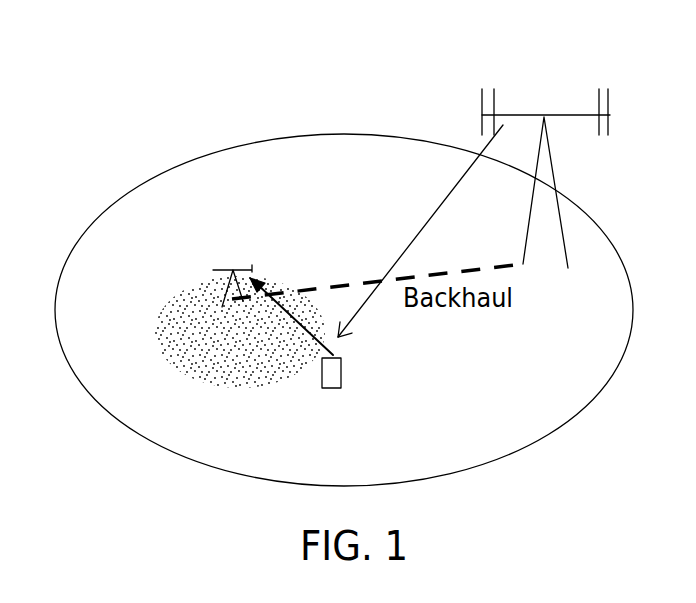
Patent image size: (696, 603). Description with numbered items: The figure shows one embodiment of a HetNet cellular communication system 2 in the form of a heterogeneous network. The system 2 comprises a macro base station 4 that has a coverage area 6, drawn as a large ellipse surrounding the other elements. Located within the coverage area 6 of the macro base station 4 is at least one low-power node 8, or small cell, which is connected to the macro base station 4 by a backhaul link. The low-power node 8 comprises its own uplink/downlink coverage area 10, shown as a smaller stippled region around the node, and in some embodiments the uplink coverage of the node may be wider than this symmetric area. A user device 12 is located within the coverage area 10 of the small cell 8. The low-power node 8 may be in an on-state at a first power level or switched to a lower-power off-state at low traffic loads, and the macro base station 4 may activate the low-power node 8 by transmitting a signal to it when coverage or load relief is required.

The HetNet cellular communication system 2 is at (546, 60).
The macro base station 4 is at (608, 90).
The coverage area 6 is at (634, 304).
The low-power node 8 is at (213, 270).
The uplink/downlink coverage area 10 is at (163, 336).
The user device 12 is at (341, 370).